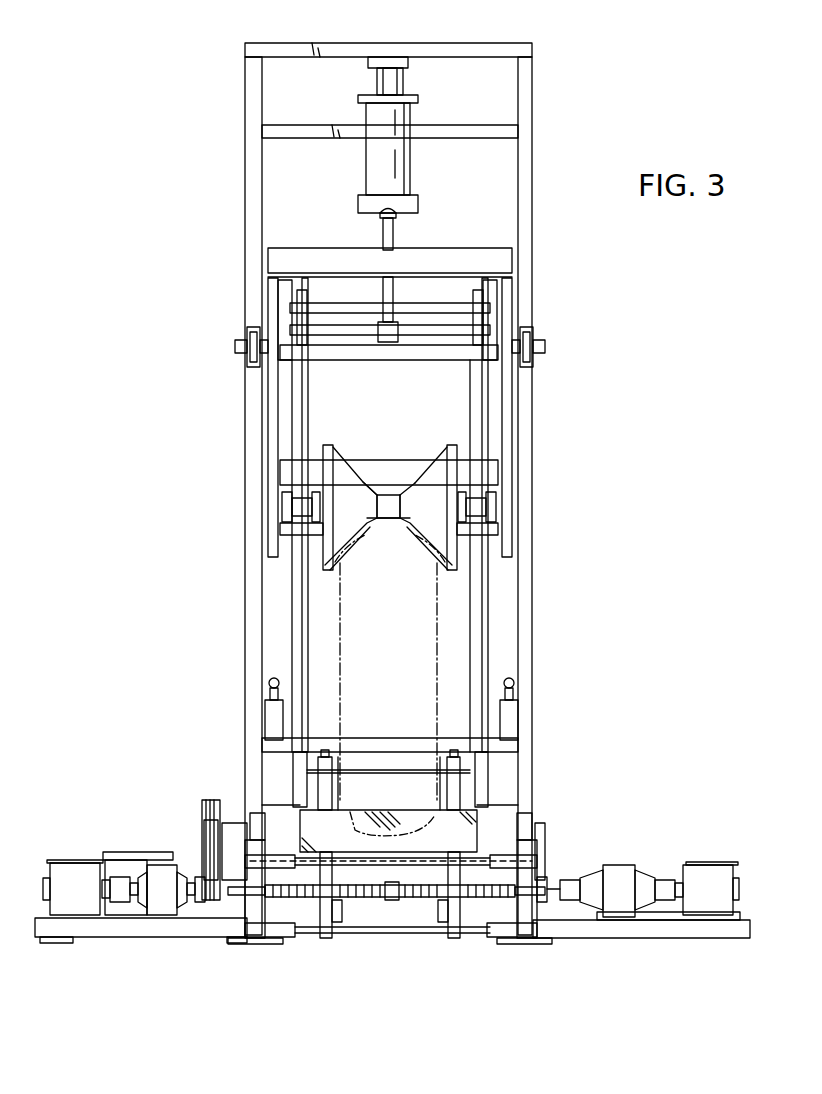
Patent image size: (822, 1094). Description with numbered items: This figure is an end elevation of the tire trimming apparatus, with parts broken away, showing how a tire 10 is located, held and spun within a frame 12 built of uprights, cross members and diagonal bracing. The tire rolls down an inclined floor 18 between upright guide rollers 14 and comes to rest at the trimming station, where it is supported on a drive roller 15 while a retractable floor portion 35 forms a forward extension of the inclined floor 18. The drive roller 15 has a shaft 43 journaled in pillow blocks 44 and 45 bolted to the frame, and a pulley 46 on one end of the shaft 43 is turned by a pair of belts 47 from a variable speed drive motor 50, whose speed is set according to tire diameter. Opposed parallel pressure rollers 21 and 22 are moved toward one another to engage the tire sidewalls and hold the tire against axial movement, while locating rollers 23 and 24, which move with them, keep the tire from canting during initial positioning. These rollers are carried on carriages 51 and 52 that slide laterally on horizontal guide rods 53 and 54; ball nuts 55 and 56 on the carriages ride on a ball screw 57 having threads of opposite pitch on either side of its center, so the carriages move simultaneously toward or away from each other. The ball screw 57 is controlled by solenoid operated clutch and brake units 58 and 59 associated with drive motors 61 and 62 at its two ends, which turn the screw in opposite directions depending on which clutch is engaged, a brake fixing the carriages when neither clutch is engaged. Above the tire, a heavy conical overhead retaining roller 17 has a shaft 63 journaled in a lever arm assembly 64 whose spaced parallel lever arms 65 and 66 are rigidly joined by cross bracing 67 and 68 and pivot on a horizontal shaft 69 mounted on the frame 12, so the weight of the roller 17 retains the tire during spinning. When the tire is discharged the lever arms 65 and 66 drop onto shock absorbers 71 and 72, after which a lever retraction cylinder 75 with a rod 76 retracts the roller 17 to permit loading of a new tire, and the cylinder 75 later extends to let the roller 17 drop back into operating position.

The tire 10 is at (437, 603).
The frame 12 is at (532, 180).
The upright guide rollers 14 is at (308, 670).
The drive roller 15 is at (430, 868).
The overhead retaining roller 17 is at (420, 545).
The inclined floor 18 is at (373, 752).
The pressure roller 21 is at (342, 780).
The pressure roller 22 is at (437, 787).
The locating roller 23 is at (303, 788).
The locating roller 24 is at (457, 787).
The retractable floor portion 35 is at (403, 787).
The shaft 43 is at (200, 818).
The pillow block 44 is at (250, 817).
The pillow block 45 is at (535, 822).
The pulley 46 is at (203, 817).
The belts 47 is at (210, 845).
The variable speed drive motor 50 is at (135, 853).
The carriage 51 is at (324, 905).
The carriage 52 is at (455, 920).
The horizontal guide rod 53 is at (368, 858).
The horizontal guide rod 54 is at (370, 900).
The ball nut 55 is at (280, 937).
The ball nut 56 is at (470, 912).
The ball screw 57 is at (398, 902).
The solenoid operated clutch and brake unit 58 is at (160, 918).
The solenoid operated clutch and brake unit 59 is at (620, 868).
The drive motor 61 is at (70, 870).
The drive motor 62 is at (705, 880).
The shaft 63 is at (478, 508).
The lever arm assembly 64 is at (268, 317).
The lever arm 65 is at (273, 398).
The lever arm 66 is at (505, 402).
The cross bracing 67 is at (462, 258).
The cross bracing 68 is at (495, 530).
The horizontal shaft 69 is at (410, 350).
The shock absorber 71 is at (270, 703).
The shock absorber 72 is at (510, 703).
The lever retraction cylinder 75 is at (410, 150).
The rod 76 is at (393, 238).